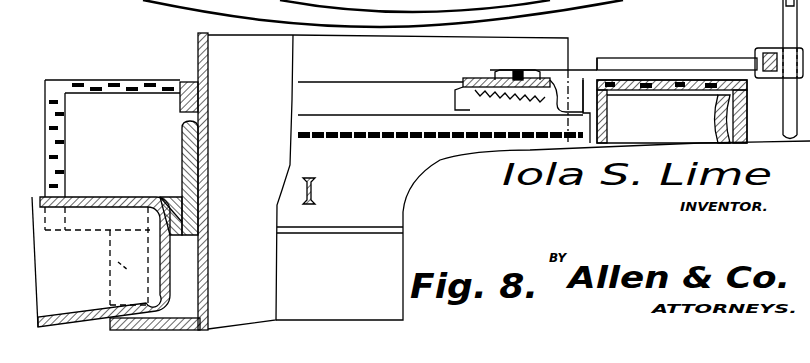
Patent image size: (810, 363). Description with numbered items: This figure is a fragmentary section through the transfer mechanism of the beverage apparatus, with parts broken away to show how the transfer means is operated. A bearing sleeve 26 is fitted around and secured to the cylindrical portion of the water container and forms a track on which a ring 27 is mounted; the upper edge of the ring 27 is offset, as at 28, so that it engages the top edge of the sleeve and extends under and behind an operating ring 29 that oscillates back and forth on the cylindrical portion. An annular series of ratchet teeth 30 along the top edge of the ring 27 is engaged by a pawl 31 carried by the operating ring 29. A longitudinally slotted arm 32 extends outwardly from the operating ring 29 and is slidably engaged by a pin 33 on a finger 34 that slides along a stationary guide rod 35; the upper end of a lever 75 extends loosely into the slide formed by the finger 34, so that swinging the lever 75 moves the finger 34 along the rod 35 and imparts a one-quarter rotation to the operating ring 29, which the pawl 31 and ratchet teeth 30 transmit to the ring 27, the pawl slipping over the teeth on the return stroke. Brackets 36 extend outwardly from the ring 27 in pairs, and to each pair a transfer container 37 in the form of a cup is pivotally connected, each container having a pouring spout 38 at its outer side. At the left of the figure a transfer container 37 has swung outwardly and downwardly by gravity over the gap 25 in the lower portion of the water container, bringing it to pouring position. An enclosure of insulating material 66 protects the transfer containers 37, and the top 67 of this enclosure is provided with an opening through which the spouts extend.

The gap 25 is at (127, 305).
The bearing sleeve 26 is at (208, 145).
The ring 27 is at (183, 152).
The offset 28 is at (190, 82).
The operating ring 29 is at (418, 81).
The ratchet teeth 30 is at (208, 98).
The pawl 31 is at (524, 78).
The longitudinally slotted arm 32 is at (598, 68).
The pin 33 is at (632, 66).
The finger 34 is at (758, 48).
The stationary guide rod 35 is at (775, 72).
The brackets 36 is at (175, 192).
The transfer container 37 is at (105, 197).
The pouring spout 38 is at (52, 313).
The enclosure of insulating material 66 is at (750, 124).
The top 67 is at (105, 80).
The lever 75 is at (794, 81).